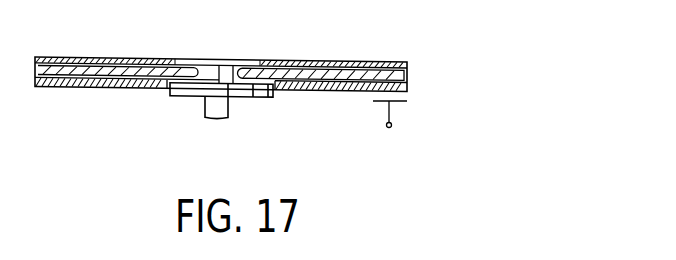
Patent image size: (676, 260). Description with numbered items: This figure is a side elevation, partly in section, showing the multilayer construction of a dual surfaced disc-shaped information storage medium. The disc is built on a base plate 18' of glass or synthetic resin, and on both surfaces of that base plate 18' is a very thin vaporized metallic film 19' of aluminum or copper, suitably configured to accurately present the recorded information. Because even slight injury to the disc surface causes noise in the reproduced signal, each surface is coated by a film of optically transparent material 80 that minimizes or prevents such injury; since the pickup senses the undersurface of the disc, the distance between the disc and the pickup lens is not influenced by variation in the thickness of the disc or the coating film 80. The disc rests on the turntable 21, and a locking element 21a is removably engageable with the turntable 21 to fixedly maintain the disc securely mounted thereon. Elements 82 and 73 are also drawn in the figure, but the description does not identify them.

The base plate 18' is at (253, 74).
The vaporized metallic film 19' is at (259, 63).
The film of optically transparent material 80 is at (297, 60).
The locking element 21a is at (184, 58).
The turntable 21 is at (181, 97).
The divider 82 is at (260, 97).
The connector 73 is at (405, 101).